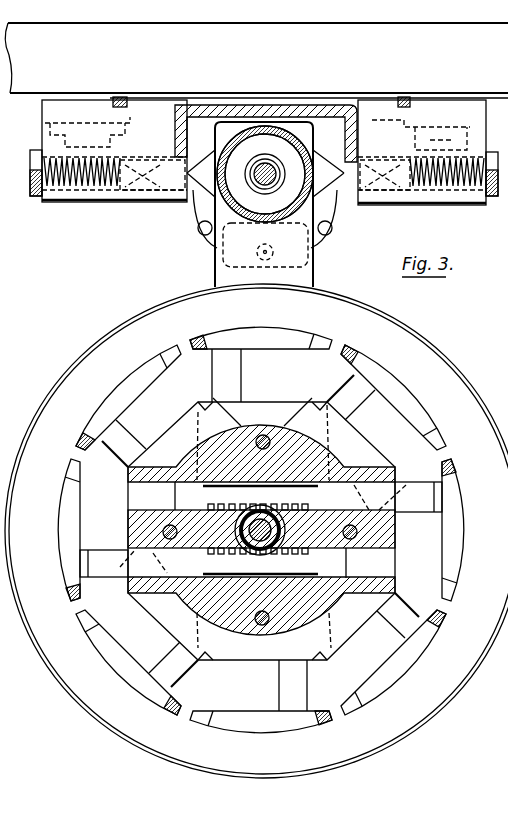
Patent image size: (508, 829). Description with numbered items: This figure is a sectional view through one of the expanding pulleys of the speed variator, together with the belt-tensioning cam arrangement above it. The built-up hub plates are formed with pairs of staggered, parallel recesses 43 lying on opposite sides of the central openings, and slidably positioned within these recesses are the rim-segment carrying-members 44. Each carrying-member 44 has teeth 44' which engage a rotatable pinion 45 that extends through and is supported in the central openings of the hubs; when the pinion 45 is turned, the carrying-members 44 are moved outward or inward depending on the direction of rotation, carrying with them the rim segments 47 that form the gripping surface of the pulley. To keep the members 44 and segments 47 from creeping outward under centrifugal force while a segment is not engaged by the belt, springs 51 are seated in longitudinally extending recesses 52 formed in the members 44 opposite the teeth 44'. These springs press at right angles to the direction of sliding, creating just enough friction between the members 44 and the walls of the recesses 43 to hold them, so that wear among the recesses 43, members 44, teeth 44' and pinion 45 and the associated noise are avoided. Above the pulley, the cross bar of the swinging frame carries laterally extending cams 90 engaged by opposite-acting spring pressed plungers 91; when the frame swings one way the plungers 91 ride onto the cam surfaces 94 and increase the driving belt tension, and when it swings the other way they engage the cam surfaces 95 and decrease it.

The recesses 43 is at (155, 497).
The rim-segment carrying-members 44 is at (255, 530).
The teeth 44' is at (276, 532).
The pinion 45 is at (277, 547).
The segments 47 is at (257, 336).
The springs 51 is at (213, 487).
The recesses 52 is at (210, 573).
The cams 90 is at (205, 175).
The spring pressed plungers 91 is at (160, 175).
The cam surfaces 94 is at (202, 156).
The cam surfaces 95 is at (207, 177).